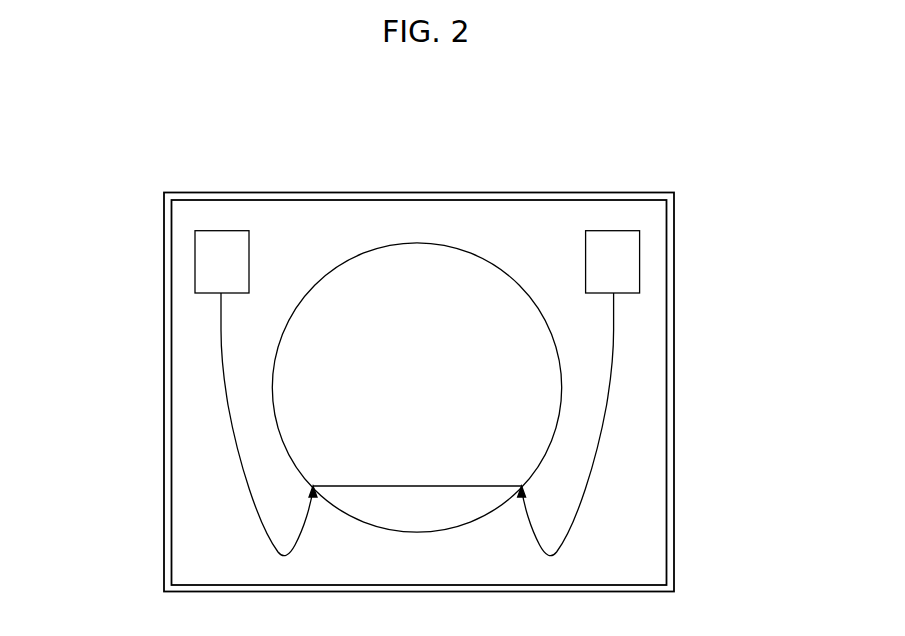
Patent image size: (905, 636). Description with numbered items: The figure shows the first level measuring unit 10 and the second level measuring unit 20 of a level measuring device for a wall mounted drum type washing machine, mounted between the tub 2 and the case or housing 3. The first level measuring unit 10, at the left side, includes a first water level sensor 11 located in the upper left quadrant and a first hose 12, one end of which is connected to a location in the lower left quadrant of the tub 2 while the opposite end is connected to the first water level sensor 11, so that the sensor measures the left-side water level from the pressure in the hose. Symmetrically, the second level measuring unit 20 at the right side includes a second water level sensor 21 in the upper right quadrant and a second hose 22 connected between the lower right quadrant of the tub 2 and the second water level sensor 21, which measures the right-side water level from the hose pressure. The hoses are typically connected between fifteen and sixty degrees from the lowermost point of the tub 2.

The tub 2 is at (453, 247).
The housing 3 is at (164, 246).
The first level measuring unit 10 is at (182, 393).
The first water level sensor 11 is at (195, 287).
The first hose 12 is at (222, 375).
The second level measuring unit 20 is at (655, 393).
The second water level sensor 21 is at (640, 280).
The second hose 22 is at (613, 373).